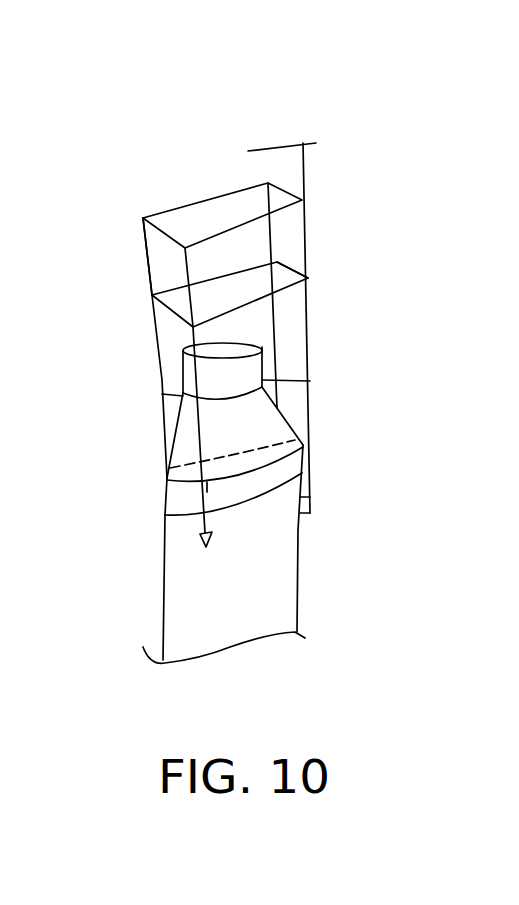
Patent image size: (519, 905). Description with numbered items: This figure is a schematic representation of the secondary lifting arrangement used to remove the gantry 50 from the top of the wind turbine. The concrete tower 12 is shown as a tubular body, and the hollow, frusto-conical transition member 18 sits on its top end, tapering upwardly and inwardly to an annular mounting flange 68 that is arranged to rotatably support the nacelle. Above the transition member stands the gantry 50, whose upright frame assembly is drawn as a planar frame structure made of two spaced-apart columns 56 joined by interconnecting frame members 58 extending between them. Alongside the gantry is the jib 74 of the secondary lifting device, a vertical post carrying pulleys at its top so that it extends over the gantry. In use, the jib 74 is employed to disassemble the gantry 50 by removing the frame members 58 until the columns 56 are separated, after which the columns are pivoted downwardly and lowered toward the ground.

The tower 12 is at (293, 553).
The transition member 18 is at (182, 445).
The gantry 50 is at (114, 226).
The columns 56 is at (185, 277).
The interconnecting frame members 58 is at (198, 203).
The annular mounting flange 68 is at (247, 342).
The jib 74 is at (305, 168).